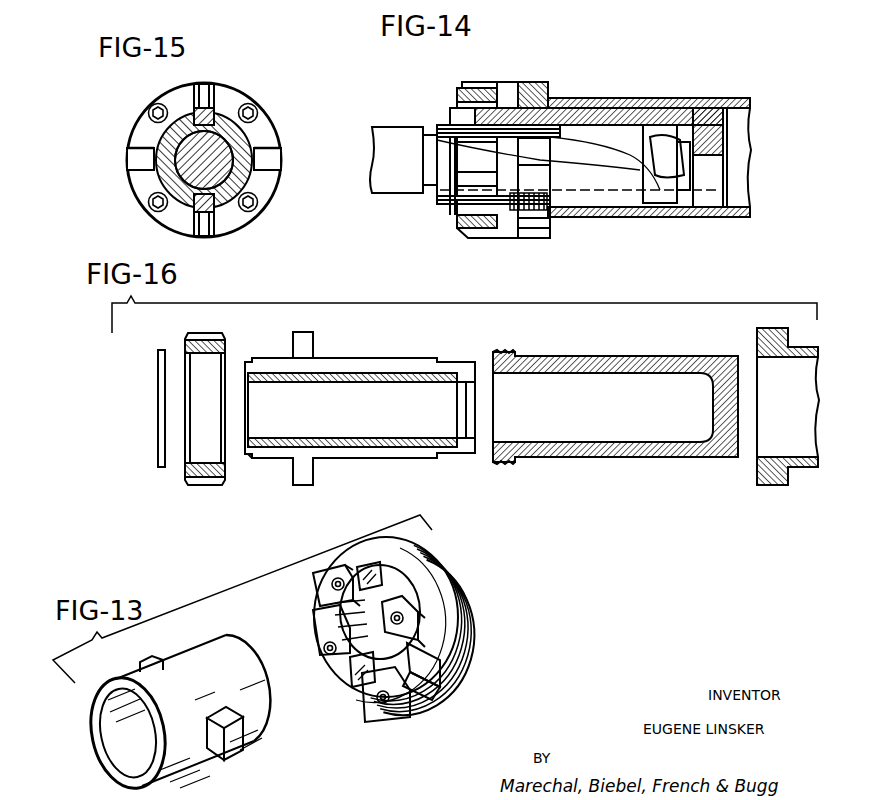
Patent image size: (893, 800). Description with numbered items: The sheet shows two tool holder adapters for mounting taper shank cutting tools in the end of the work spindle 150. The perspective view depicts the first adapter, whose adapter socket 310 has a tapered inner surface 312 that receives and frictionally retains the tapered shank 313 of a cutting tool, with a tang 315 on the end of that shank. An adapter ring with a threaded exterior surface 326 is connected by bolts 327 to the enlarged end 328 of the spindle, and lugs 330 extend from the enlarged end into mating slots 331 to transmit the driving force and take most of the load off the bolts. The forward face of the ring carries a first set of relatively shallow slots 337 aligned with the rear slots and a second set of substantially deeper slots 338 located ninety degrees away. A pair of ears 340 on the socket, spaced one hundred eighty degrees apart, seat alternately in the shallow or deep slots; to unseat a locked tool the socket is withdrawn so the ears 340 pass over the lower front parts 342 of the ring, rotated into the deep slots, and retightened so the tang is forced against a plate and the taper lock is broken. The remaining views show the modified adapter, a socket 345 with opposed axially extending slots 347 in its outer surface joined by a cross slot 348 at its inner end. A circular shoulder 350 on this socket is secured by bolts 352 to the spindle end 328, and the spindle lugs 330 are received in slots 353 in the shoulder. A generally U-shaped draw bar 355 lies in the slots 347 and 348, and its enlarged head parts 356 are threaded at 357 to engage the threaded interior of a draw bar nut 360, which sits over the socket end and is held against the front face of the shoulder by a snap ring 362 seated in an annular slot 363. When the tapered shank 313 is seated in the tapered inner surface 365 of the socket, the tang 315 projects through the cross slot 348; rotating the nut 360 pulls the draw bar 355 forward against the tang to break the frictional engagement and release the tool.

In FIG. 14, the work spindle 150 is at (607, 207).
In FIG. 16, the work spindle 150 is at (800, 485).
In FIG. 13, the adapter socket 310 is at (196, 668).
In FIG. 13, the tapered inner surface 312 is at (128, 755).
In FIG. 15, the tapered shank 313 is at (174, 176).
In FIG. 14, the tapered shank 313 is at (616, 137).
In FIG. 14, the tang 315 is at (668, 140).
In FIG. 13, the threaded exterior surface 326 is at (353, 560).
In FIG. 13, the bolts 327 is at (332, 577).
In FIG. 14, the enlarged end 328 is at (530, 82).
In FIG. 16, the enlarged end 328 is at (760, 340).
In FIG. 13, the enlarged end 328 is at (462, 620).
In FIG. 15, the lugs 330 is at (128, 160).
In FIG. 14, the lugs 330 is at (510, 158).
In FIG. 13, the lugs 330 is at (452, 665).
In FIG. 13, the mating slots 331 is at (450, 650).
In FIG. 13, the shallow slots 337 is at (328, 592).
In FIG. 13, the deep slots 338 is at (350, 690).
In FIG. 13, the ears 340 is at (140, 662).
In FIG. 13, the lower front parts 342 is at (320, 627).
In FIG. 15, the socket 345 is at (244, 138).
In FIG. 16, the socket 345 is at (382, 350).
In FIG. 15, the axially extending slots 347 is at (196, 224).
In FIG. 14, the axially extending slots 347 is at (456, 118).
In FIG. 16, the axially extending slots 347 is at (410, 360).
In FIG. 16, the cross slot 348 is at (472, 405).
In FIG. 15, the circular shoulder 350 is at (270, 188).
In FIG. 14, the circular shoulder 350 is at (462, 232).
In FIG. 16, the circular shoulder 350 is at (298, 348).
In FIG. 15, the bolts 352 is at (150, 106).
In FIG. 14, the bolts 352 is at (553, 220).
In FIG. 15, the slots 353 is at (136, 145).
In FIG. 14, the slots 353 is at (452, 162).
In FIG. 15, the draw bar 355 is at (206, 106).
In FIG. 14, the draw bar 355 is at (601, 157).
In FIG. 16, the draw bar 355 is at (595, 358).
In FIG. 15, the enlarged head parts 356 is at (207, 232).
In FIG. 16, the enlarged head parts 356 is at (503, 352).
In FIG. 16, the threads 357 is at (508, 460).
In FIG. 16, the draw bar nut 360 is at (192, 348).
In FIG. 14, the snap ring 362 is at (456, 104).
In FIG. 16, the snap ring 362 is at (158, 417).
In FIG. 16, the annular slot 363 is at (253, 460).
In FIG. 16, the tapered inner surface 365 is at (343, 438).